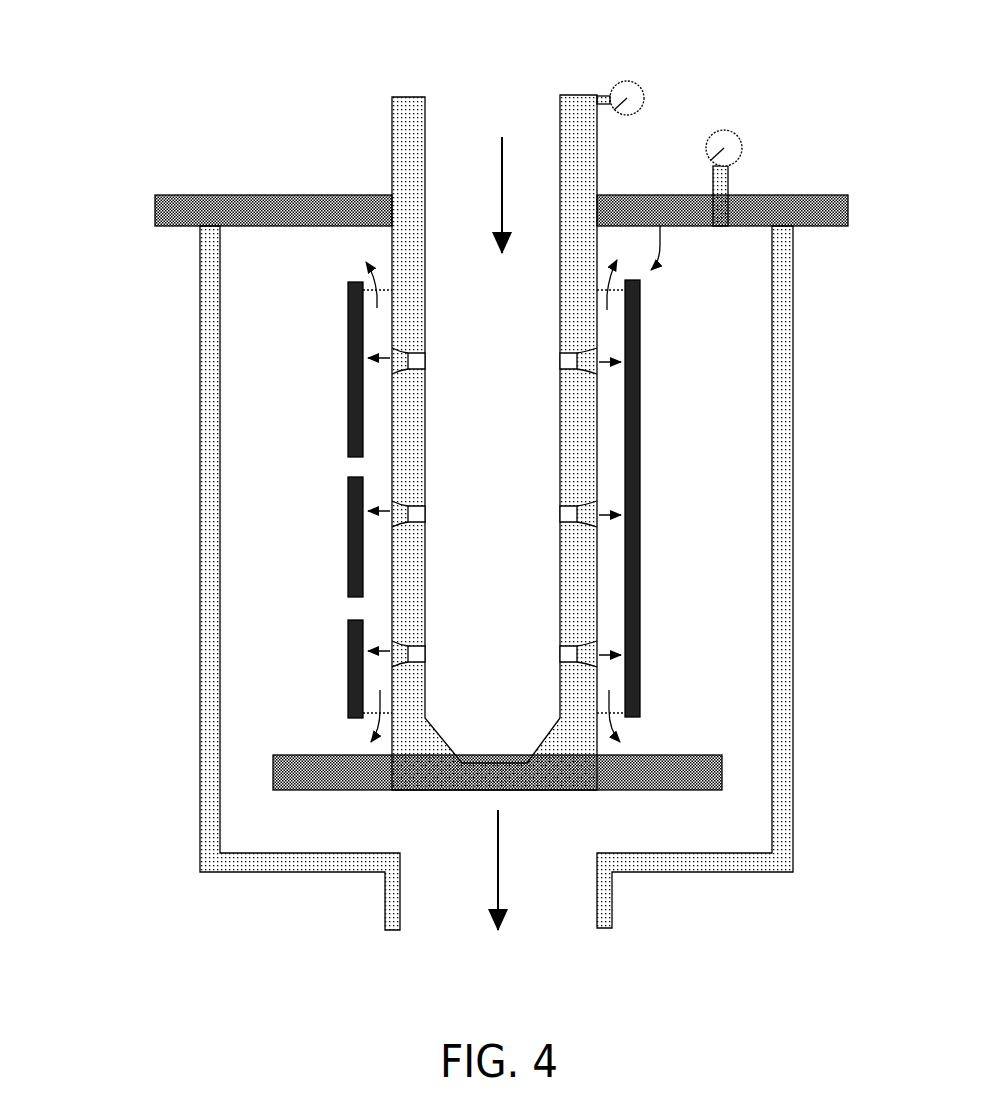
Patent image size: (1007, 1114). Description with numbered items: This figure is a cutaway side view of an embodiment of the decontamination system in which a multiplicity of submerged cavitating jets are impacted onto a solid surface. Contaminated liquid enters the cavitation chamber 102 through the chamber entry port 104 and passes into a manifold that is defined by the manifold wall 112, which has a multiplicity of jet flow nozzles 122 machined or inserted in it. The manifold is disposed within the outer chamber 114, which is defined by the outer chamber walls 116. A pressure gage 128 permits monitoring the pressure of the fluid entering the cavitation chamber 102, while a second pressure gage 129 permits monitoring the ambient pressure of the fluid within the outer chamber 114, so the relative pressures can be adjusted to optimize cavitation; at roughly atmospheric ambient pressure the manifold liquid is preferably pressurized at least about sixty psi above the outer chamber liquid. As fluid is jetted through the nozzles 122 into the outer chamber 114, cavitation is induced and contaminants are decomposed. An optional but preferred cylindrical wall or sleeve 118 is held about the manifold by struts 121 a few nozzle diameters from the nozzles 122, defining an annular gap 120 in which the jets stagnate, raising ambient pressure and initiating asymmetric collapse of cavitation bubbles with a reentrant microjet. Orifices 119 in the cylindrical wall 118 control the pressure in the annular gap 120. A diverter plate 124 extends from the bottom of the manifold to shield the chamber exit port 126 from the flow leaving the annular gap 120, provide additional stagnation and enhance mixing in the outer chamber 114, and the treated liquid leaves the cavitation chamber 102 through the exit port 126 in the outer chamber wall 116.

The cavitation chamber 102 is at (469, 507).
The chamber entry port 104 is at (443, 160).
The manifold wall 112 is at (410, 244).
The outer chamber 114 is at (732, 586).
The outer chamber wall 116 is at (788, 310).
The cylindrical wall or sleeve 118 is at (640, 450).
The orifices 119 is at (340, 465).
The annular gap 120 is at (375, 333).
The struts 121 is at (620, 708).
The jet flow nozzles 122 is at (560, 650).
The diverter plate 124 is at (695, 771).
The chamber exit port 126 is at (545, 887).
The pressure gage 128 is at (631, 95).
The pressure gage 129 is at (728, 145).